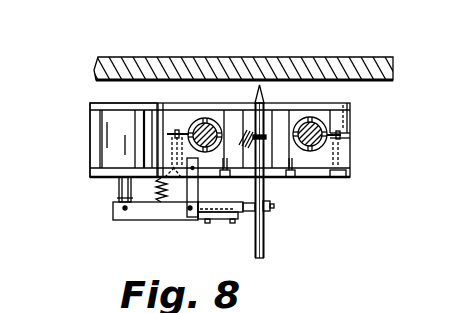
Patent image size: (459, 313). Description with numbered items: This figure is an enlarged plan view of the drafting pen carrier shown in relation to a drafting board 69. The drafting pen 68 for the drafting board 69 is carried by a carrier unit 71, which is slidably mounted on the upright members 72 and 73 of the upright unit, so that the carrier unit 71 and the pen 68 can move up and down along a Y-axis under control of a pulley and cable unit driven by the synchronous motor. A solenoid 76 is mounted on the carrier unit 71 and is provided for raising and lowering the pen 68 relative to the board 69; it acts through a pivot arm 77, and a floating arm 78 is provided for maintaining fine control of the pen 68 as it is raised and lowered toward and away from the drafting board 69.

The drafting board 69 is at (347, 58).
The carrier unit 71 is at (348, 154).
The upright member 72 is at (197, 121).
The upright member 73 is at (324, 126).
The solenoid 76 is at (125, 151).
The pivot arm 77 is at (172, 212).
The floating arm 78 is at (274, 205).
The drafting pen 68 is at (265, 249).